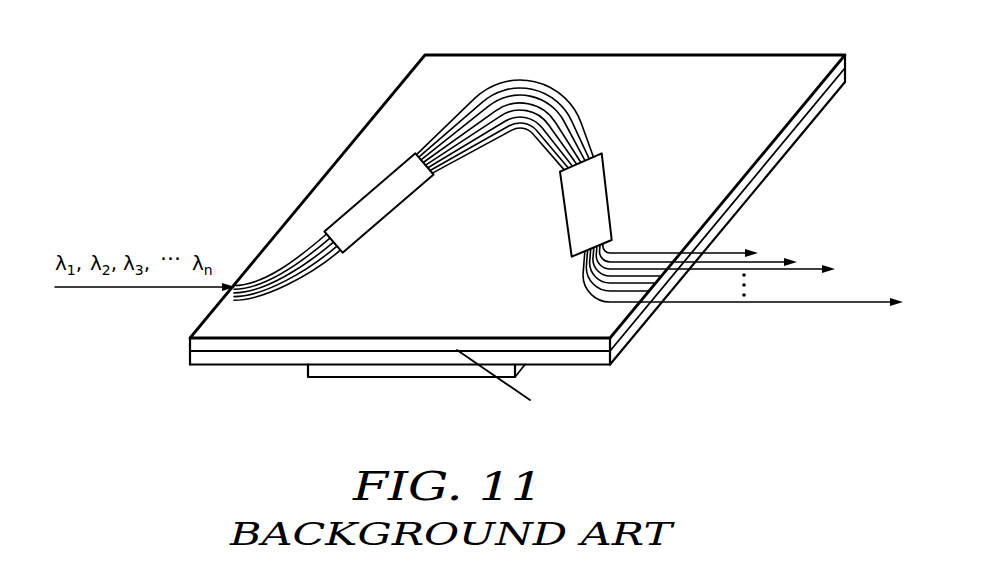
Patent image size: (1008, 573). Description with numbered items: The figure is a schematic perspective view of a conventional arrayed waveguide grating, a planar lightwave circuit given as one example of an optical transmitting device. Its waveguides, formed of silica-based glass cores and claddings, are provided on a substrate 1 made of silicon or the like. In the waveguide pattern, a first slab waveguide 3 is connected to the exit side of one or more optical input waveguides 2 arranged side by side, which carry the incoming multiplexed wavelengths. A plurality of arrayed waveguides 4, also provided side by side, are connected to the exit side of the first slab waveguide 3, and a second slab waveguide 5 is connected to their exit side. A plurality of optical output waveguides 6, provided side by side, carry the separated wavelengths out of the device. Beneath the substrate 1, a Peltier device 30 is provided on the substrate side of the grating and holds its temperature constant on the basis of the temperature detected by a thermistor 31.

The substrate 1 is at (798, 133).
The optical input waveguides 2 is at (278, 273).
The first slab waveguide 3 is at (392, 200).
The arrayed waveguides 4 is at (537, 79).
The second slab waveguide 5 is at (578, 208).
The optical output waveguides 6 is at (650, 253).
The Peltier device 30 is at (308, 369).
The thermistor 31 is at (503, 380).